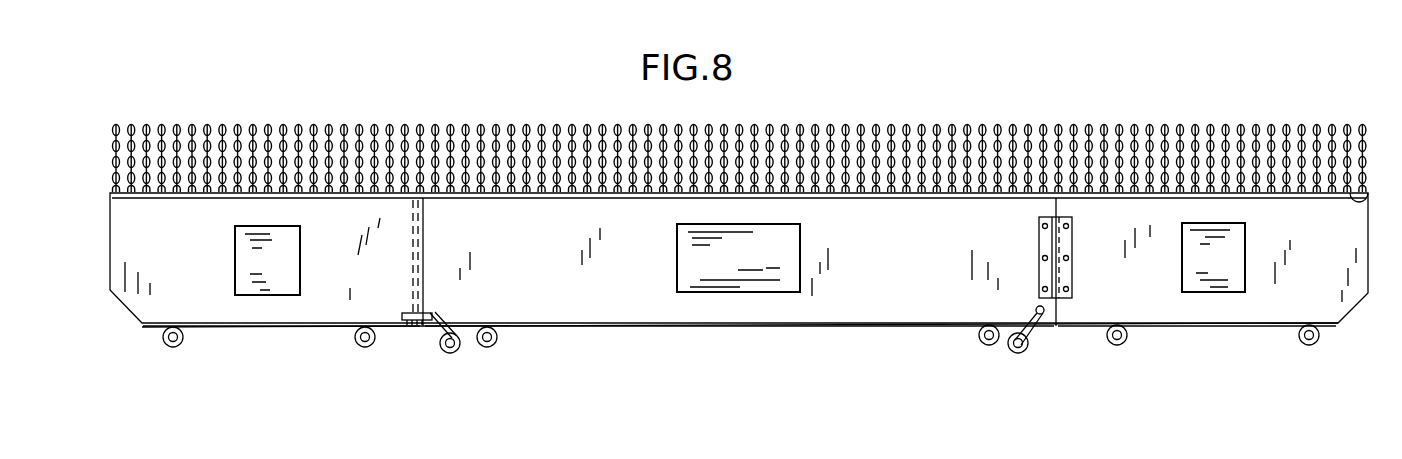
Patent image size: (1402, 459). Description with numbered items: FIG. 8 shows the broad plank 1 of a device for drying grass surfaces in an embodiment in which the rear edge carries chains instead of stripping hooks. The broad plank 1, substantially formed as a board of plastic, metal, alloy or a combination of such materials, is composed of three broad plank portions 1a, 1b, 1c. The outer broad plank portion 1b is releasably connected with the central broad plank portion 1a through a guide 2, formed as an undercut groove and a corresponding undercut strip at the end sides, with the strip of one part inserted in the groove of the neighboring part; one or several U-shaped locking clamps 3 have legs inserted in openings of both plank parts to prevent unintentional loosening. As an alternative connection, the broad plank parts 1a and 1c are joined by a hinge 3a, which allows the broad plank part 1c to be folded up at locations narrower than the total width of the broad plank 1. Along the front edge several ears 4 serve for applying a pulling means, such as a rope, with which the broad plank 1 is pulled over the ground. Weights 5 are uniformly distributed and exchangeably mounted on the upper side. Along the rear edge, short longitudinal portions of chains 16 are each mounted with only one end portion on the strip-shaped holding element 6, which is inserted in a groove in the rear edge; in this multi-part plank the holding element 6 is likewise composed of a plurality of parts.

The broad plank 1 is at (922, 112).
The central broad plank portion 1a is at (643, 312).
The outer broad plank portion 1b is at (272, 316).
The broad plank portion 1c is at (1176, 312).
The guide 2 is at (426, 243).
The U-shaped locking clamp 3 is at (416, 323).
The hinge 3a is at (1066, 246).
The ears 4 is at (178, 348).
The weights 5 is at (292, 270).
The holding element 6 is at (1360, 197).
The chains 16 is at (157, 122).